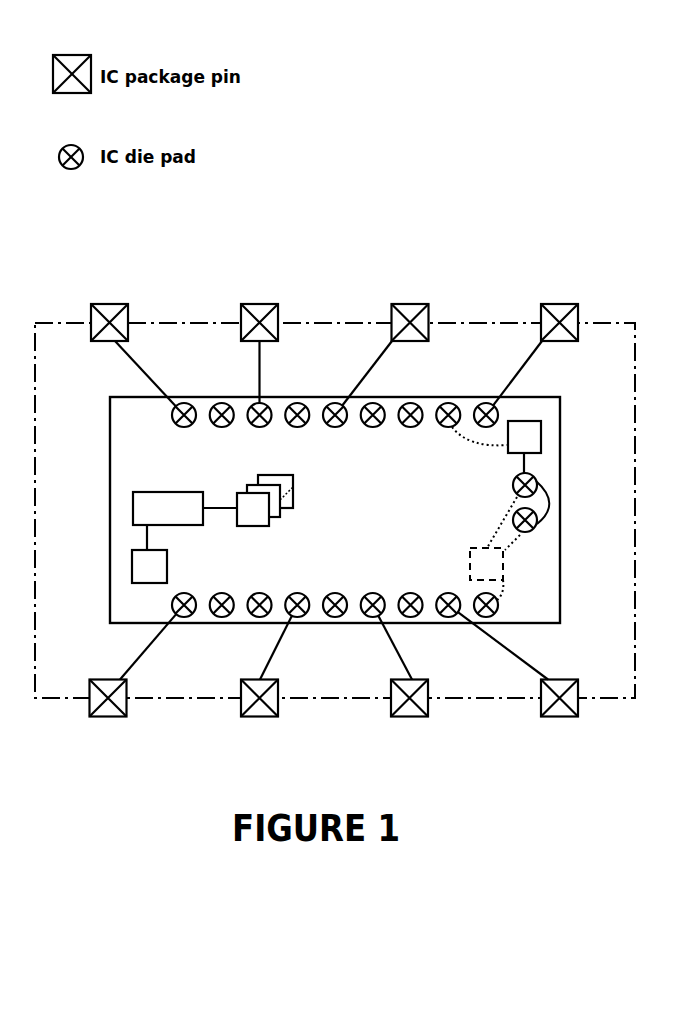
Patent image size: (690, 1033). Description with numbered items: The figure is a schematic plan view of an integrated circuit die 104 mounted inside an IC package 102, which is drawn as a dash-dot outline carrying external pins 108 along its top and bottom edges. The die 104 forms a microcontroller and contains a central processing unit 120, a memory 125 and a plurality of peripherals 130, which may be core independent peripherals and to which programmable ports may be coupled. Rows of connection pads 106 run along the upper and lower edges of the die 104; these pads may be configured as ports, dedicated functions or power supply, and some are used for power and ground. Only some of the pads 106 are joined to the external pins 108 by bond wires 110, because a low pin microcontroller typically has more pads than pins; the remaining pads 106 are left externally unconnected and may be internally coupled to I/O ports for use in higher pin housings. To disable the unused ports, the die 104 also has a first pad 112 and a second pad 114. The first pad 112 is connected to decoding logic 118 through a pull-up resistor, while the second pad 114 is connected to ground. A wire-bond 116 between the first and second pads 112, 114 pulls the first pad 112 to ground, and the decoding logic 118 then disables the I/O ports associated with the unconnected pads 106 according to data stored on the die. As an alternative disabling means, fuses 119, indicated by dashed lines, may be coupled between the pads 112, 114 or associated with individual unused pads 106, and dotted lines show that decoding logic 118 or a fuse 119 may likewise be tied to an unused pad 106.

The IC package 102 is at (613, 322).
The integrated circuit die 104 is at (110, 490).
The connection pads 106 is at (478, 425).
The external pins 108 is at (114, 297).
The bond wires 110 is at (143, 373).
The first pad 112 is at (515, 480).
The second pad 114 is at (510, 521).
The wire-bond 116 is at (549, 508).
The decoding logic 118 is at (524, 436).
The fuses 119 is at (470, 553).
The central processing unit 120 is at (173, 490).
The memory 125 is at (132, 567).
The peripherals 130 is at (257, 535).